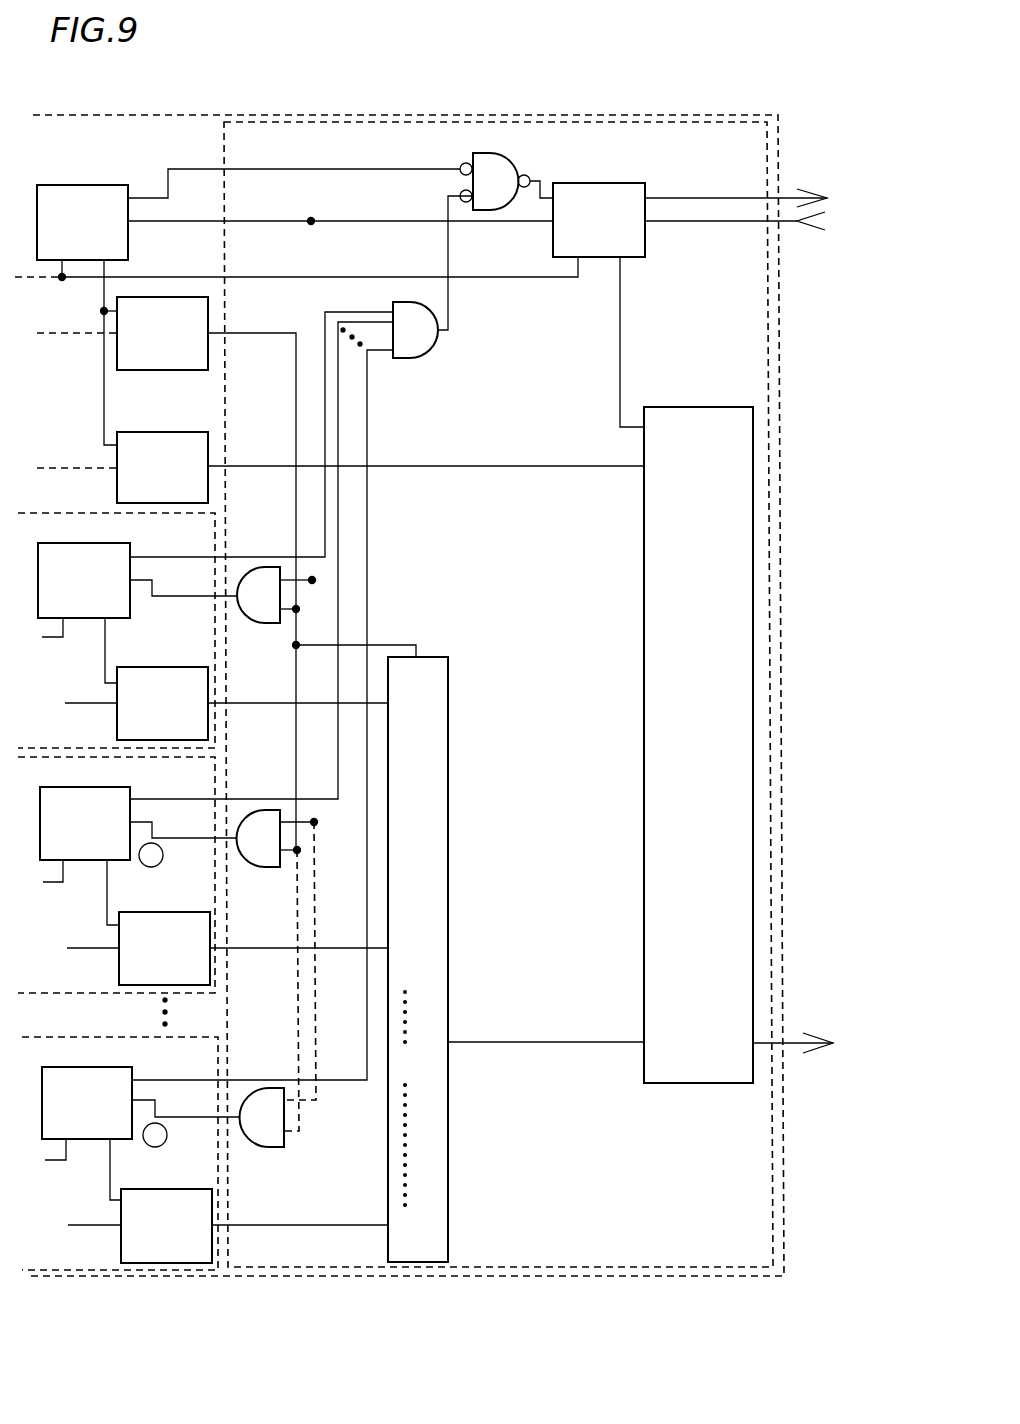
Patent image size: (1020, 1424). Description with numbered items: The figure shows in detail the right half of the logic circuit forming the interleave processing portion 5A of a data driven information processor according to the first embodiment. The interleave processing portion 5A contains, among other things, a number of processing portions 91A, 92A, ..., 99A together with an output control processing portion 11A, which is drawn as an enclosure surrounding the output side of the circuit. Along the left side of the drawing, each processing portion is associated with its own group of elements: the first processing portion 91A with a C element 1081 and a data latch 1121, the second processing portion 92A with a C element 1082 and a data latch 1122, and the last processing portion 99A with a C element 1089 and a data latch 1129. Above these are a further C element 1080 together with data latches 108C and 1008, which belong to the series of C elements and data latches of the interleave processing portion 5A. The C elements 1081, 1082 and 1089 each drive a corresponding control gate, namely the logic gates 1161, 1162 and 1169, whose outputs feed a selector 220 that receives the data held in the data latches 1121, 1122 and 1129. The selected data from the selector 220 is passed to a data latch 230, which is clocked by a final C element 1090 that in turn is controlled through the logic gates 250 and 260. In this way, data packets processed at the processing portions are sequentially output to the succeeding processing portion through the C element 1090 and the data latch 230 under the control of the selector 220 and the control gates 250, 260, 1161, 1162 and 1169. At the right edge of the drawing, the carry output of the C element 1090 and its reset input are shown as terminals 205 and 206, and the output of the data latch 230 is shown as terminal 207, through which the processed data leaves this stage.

The output control processing portion 11A is at (352, 118).
The interleave processing portion 5A is at (447, 122).
The processing portion 91A is at (34, 516).
The processing portion 92A is at (34, 996).
The processing portion 99A is at (34, 1040).
The C element 1080 is at (296, 303).
The C element 1081 is at (137, 602).
The C element 1082 is at (138, 844).
The C element 1089 is at (141, 1122).
The C element 1090 is at (599, 293).
The data latch 108C is at (166, 573).
The data latch 1008 is at (340, 455).
The data latch 1121 is at (226, 692).
The data latch 1122 is at (227, 936).
The data latch 1129 is at (228, 1214).
The logic gate 1161 is at (326, 612).
The logic gate 1162 is at (277, 970).
The logic gate 1169 is at (266, 1131).
The logic gate 250 is at (506, 169).
The logic gate 260 is at (301, 638).
The selector 220 is at (516, 947).
The data latch 230 is at (698, 733).
The carry output terminal 205 is at (753, 186).
The reset input terminal 206 is at (753, 234).
The output terminal 207 is at (830, 1045).